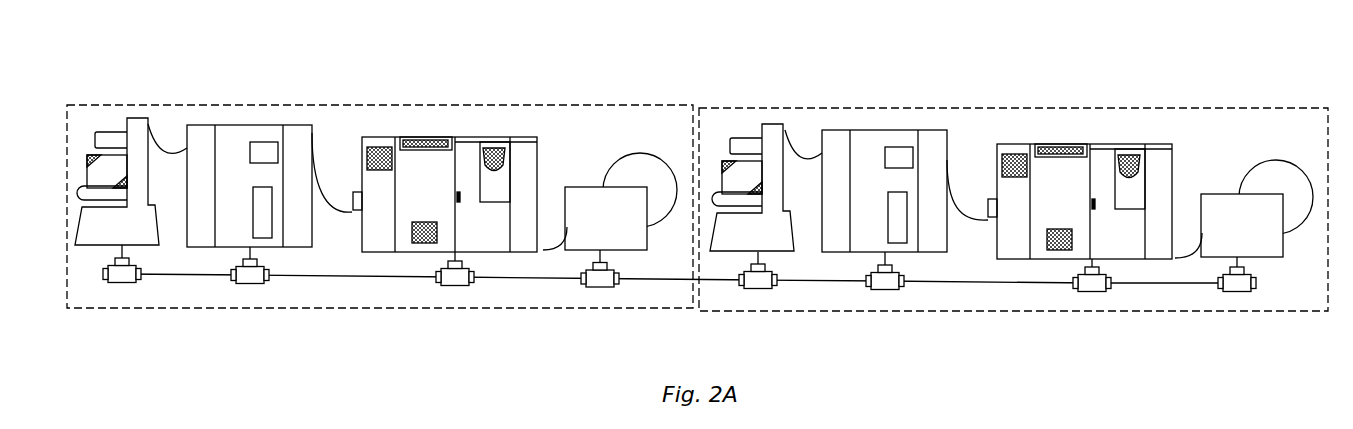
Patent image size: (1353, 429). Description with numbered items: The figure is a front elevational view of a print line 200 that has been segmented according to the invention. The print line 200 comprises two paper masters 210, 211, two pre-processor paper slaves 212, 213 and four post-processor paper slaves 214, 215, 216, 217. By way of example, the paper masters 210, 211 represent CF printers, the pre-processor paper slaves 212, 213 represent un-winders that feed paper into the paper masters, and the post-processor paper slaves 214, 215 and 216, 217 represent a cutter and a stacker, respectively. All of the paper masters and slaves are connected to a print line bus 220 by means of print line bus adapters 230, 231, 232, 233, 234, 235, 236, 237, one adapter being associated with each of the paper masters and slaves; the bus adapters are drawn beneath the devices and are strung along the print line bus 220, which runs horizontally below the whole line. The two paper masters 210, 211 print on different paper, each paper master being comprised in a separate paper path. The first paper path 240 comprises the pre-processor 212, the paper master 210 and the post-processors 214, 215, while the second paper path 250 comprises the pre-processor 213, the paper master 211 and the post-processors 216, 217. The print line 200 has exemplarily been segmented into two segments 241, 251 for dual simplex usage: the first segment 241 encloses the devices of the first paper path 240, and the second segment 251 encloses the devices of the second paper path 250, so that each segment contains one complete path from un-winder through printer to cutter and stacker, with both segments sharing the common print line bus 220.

The print line 200 is at (1047, 85).
The paper master 210 is at (453, 137).
The paper master 211 is at (1095, 145).
The pre-processor paper slave 212 is at (575, 188).
The pre-processor paper slave 213 is at (1213, 194).
The post-processor paper slave 214 is at (137, 118).
The post-processor paper slave 215 is at (238, 125).
The post-processor paper slave 216 is at (778, 123).
The post-processor paper slave 217 is at (898, 130).
The print line bus 220 is at (828, 282).
The print line bus adapter 230 is at (122, 283).
The print line bus adapter 231 is at (247, 285).
The print line bus adapter 232 is at (458, 287).
The print line bus adapter 233 is at (600, 288).
The print line bus adapter 234 is at (758, 290).
The print line bus adapter 235 is at (887, 292).
The print line bus adapter 236 is at (1090, 293).
The print line bus adapter 237 is at (1237, 293).
The first paper path 240 is at (325, 190).
The segment 241 is at (120, 105).
The second paper path 250 is at (802, 160).
The segment 251 is at (1198, 110).